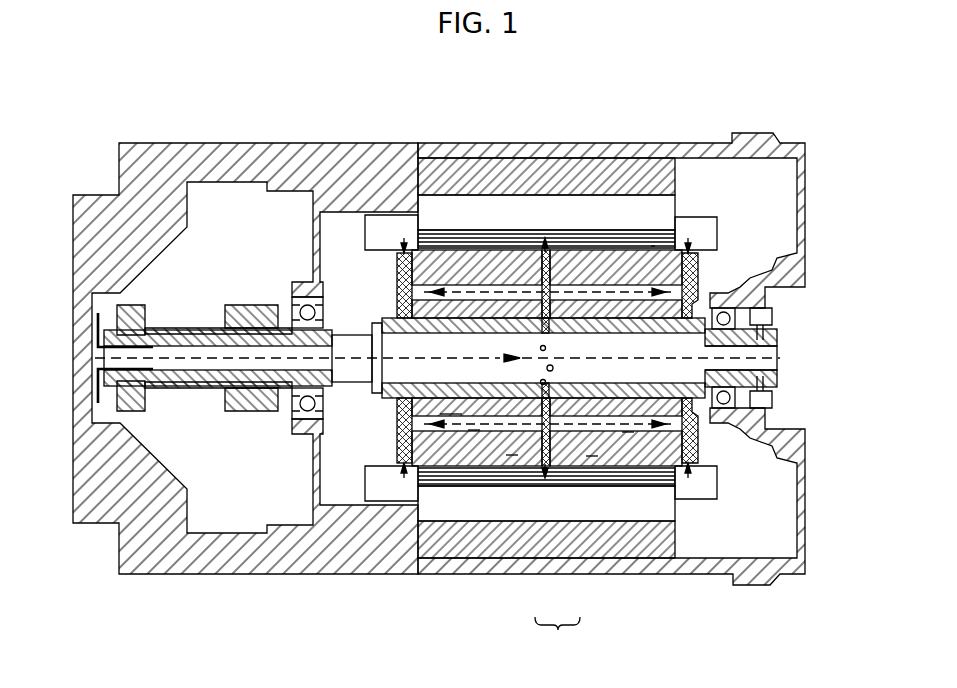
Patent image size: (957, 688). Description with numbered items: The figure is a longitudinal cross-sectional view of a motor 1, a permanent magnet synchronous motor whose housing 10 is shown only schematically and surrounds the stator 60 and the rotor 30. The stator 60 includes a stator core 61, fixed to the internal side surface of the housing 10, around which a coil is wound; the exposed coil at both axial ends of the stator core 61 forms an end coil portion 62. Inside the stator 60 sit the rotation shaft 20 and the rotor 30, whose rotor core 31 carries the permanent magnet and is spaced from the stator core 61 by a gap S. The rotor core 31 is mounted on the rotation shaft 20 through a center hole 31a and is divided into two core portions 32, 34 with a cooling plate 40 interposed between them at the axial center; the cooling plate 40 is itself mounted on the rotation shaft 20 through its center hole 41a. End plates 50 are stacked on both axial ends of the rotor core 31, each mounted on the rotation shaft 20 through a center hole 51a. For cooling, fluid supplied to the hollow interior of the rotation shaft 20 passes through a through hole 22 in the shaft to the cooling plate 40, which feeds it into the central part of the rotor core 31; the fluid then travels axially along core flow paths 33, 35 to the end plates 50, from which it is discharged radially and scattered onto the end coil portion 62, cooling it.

The motor 1 is at (483, 92).
The housing 10 is at (297, 144).
The rotation shaft 20 is at (373, 399).
The through hole 22 is at (553, 368).
The rotor 30 is at (705, 268).
The rotor core 31 is at (557, 635).
The center hole 31a is at (452, 414).
The core portion 32 is at (512, 455).
The core flow path 33 is at (473, 428).
The core portion 34 is at (592, 456).
The core flow path 35 is at (628, 432).
The cooling plate 40 is at (546, 247).
The center hole 41a is at (548, 397).
The end plate 50 is at (418, 251).
The center hole 51a is at (397, 316).
The stator 60 is at (608, 194).
The stator core 61 is at (465, 202).
The end coil portion 62 is at (372, 215).
The gap S is at (653, 245).